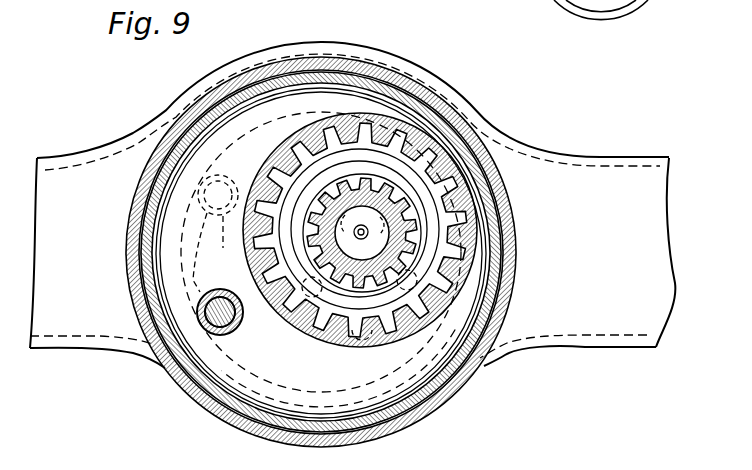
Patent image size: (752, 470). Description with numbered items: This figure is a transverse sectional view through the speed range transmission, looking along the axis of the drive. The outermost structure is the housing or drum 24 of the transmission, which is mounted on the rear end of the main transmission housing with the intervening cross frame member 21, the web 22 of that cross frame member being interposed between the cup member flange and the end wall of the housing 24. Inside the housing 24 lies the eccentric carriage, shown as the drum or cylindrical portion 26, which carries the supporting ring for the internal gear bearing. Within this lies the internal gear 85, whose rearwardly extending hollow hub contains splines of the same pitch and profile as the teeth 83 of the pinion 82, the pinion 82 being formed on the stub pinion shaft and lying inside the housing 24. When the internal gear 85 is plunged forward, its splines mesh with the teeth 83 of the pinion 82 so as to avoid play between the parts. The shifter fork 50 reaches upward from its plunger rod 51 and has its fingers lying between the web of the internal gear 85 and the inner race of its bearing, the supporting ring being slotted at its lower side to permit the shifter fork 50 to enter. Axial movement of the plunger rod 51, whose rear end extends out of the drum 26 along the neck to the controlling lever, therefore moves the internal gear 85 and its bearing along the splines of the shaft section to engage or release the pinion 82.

The cross frame member 21 is at (568, 156).
The web 22 is at (650, 248).
The housing 24 is at (382, 68).
The drum 26 is at (306, 72).
The shifter fork 50 is at (222, 290).
The plunger rod 51 is at (207, 297).
The pinion 82 is at (362, 233).
The teeth 83 is at (359, 242).
The internal gear 85 is at (440, 120).